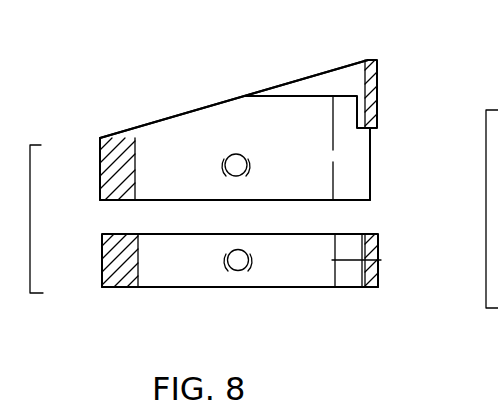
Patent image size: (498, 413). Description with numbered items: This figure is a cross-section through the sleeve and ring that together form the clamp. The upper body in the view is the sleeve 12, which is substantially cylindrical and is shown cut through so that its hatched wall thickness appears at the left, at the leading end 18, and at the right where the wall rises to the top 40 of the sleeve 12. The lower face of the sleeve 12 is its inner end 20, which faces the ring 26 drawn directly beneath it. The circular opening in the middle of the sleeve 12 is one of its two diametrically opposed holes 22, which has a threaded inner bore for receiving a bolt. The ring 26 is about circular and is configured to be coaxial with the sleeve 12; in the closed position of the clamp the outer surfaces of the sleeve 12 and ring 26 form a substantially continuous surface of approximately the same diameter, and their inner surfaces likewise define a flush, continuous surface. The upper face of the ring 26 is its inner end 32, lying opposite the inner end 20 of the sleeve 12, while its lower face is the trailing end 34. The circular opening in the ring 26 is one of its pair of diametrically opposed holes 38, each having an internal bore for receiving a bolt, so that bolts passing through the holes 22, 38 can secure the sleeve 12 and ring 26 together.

The sleeve 12 is at (152, 128).
The leading end 18 is at (332, 70).
The inner end 20 is at (345, 201).
The hole 22 is at (236, 160).
The ring 26 is at (159, 278).
The inner end 32 is at (350, 232).
The trailing end 34 is at (322, 288).
The hole 38 is at (244, 270).
The top 40 is at (375, 80).